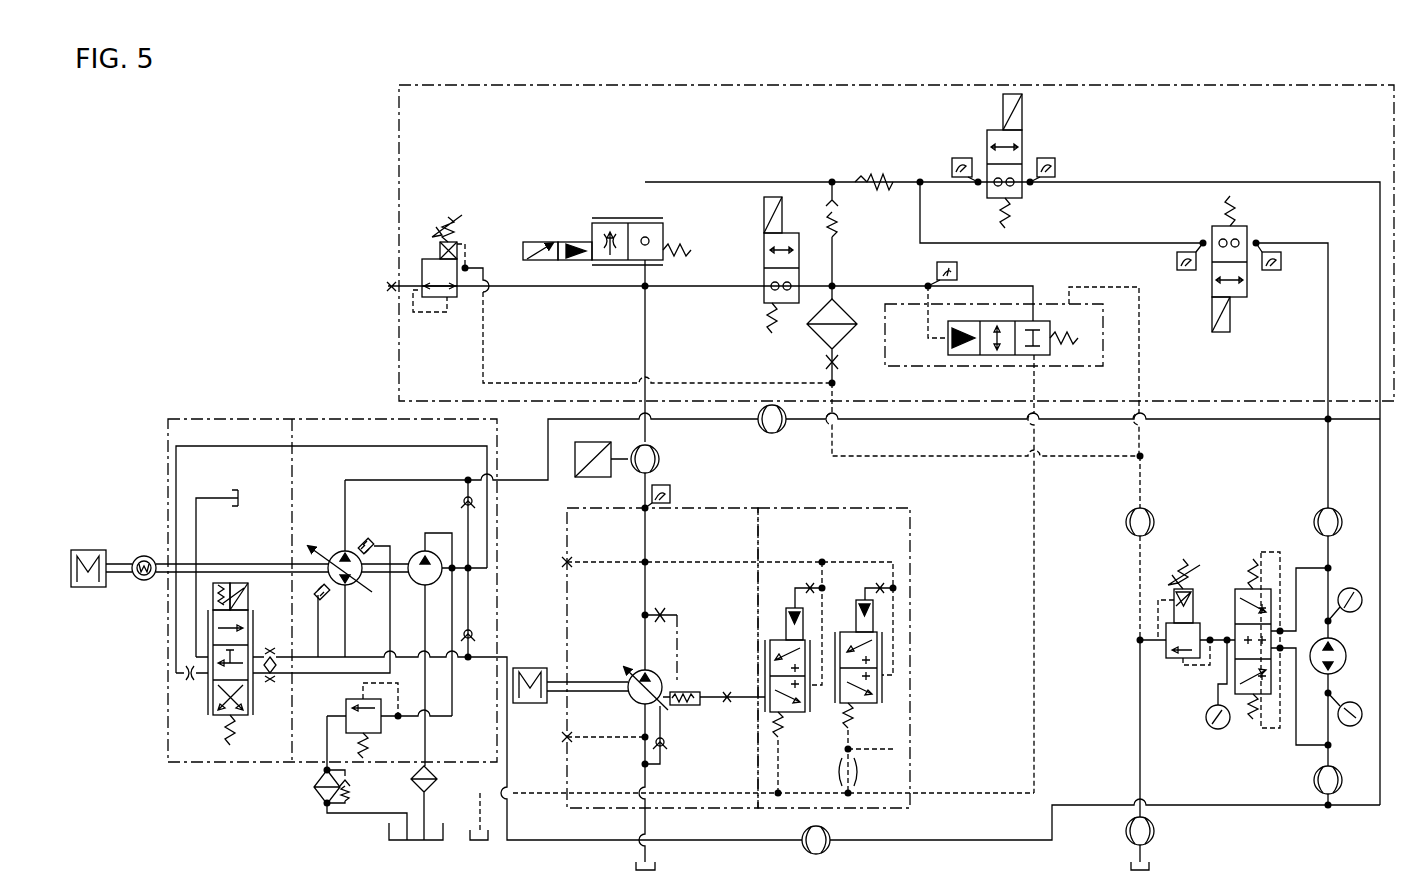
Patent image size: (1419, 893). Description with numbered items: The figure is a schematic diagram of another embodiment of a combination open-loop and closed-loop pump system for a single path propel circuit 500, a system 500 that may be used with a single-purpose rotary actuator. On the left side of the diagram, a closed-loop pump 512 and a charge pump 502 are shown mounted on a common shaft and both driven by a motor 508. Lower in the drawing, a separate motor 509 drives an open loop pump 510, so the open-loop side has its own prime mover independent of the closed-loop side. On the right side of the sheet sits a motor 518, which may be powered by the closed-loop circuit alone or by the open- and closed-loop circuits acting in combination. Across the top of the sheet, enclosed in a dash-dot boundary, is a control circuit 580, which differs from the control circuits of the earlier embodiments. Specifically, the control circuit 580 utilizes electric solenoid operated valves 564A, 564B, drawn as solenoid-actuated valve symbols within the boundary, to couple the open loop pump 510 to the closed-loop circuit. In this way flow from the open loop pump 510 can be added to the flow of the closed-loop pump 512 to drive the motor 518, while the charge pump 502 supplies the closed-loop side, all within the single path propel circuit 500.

The single path propel circuit 500 is at (362, 153).
The control circuit 580 is at (678, 82).
The electric solenoid operated valve 564A is at (1024, 138).
The electric solenoid operated valve 564B is at (1249, 232).
The motor 508 is at (90, 548).
The closed-loop pump 512 is at (339, 550).
The charge pump 502 is at (417, 548).
The motor 509 is at (529, 652).
The open loop pump 510 is at (631, 668).
The motor 518 is at (1340, 659).